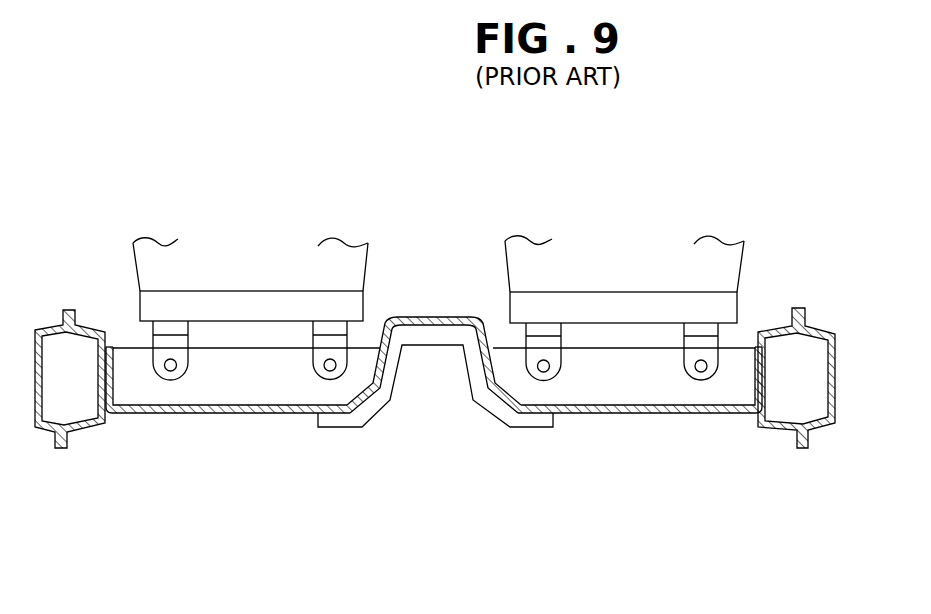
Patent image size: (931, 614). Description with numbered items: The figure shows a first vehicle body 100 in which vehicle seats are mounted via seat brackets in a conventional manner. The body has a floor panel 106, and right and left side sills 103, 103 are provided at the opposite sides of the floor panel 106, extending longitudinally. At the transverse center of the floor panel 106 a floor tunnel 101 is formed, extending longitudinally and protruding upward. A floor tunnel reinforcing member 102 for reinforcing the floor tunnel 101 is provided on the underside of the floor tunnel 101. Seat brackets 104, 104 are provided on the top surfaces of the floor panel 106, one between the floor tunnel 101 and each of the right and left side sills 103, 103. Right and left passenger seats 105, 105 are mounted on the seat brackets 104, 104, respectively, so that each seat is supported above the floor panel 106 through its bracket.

The first vehicle body 100 is at (102, 212).
The floor tunnel 101 is at (440, 317).
The floor tunnel reinforcing member 102 is at (393, 362).
The side sill 103 is at (83, 428).
The seat bracket 104 is at (223, 387).
The passenger seat 105 is at (345, 255).
The floor panel 106 is at (287, 417).